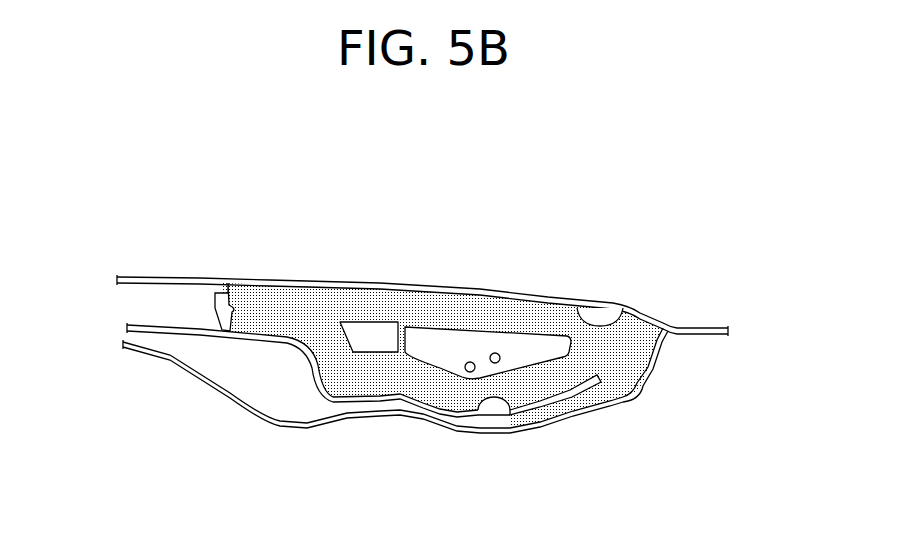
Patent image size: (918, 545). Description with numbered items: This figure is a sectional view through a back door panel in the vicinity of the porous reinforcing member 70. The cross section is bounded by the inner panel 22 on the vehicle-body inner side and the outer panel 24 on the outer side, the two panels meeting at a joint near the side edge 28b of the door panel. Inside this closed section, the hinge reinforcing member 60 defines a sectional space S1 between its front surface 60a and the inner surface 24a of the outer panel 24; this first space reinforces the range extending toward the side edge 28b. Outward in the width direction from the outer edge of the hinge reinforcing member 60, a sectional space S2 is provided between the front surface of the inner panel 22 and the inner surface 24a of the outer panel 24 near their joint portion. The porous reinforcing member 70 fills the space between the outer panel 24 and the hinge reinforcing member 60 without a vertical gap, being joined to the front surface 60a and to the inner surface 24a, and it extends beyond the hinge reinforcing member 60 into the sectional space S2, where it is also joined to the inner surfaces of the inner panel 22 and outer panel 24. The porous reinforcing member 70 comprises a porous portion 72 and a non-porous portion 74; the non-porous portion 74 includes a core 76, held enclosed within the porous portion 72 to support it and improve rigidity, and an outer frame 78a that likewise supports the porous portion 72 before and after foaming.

The porous reinforcing member 70 is at (497, 243).
The inner panel 22 is at (230, 397).
The outer panel 24 is at (548, 297).
The inner surface 24a is at (625, 307).
The side edge 28b is at (722, 318).
The hinge reinforcing member 60 is at (380, 400).
The front surface 60a is at (510, 408).
The porous portion 72 is at (628, 360).
The non-porous portion 74 is at (325, 180).
The core 76 is at (413, 338).
The outer frame 78a is at (217, 312).
The sectional space S1 is at (459, 304).
The sectional space S2 is at (638, 394).